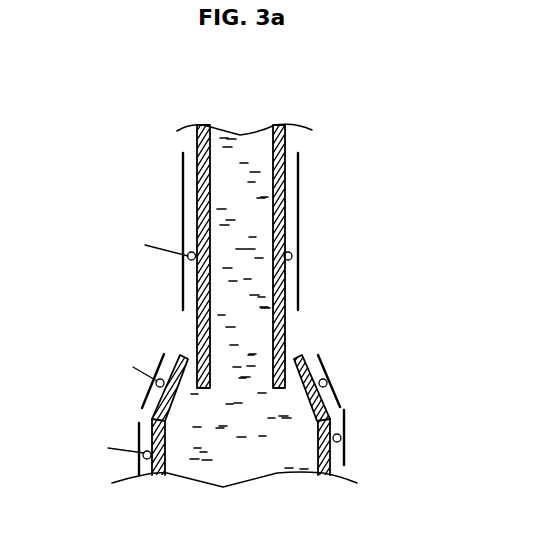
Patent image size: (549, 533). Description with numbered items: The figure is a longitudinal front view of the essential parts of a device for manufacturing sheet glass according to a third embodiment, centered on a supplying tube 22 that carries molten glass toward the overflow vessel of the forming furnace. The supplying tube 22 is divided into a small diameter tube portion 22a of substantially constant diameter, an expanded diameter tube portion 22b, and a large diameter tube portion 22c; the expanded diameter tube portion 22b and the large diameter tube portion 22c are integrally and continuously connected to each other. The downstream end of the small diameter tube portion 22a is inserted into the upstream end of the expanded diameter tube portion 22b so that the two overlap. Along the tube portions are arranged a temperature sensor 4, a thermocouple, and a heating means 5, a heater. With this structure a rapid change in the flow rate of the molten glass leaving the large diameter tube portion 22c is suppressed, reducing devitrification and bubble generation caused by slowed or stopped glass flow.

The supplying tube 22 is at (361, 279).
The small diameter tube portion 22a is at (197, 205).
The expanded diameter tube portion 22b is at (158, 398).
The large diameter tube portion 22c is at (140, 472).
The temperature sensor 4 is at (291, 255).
The heating means 5 is at (300, 187).